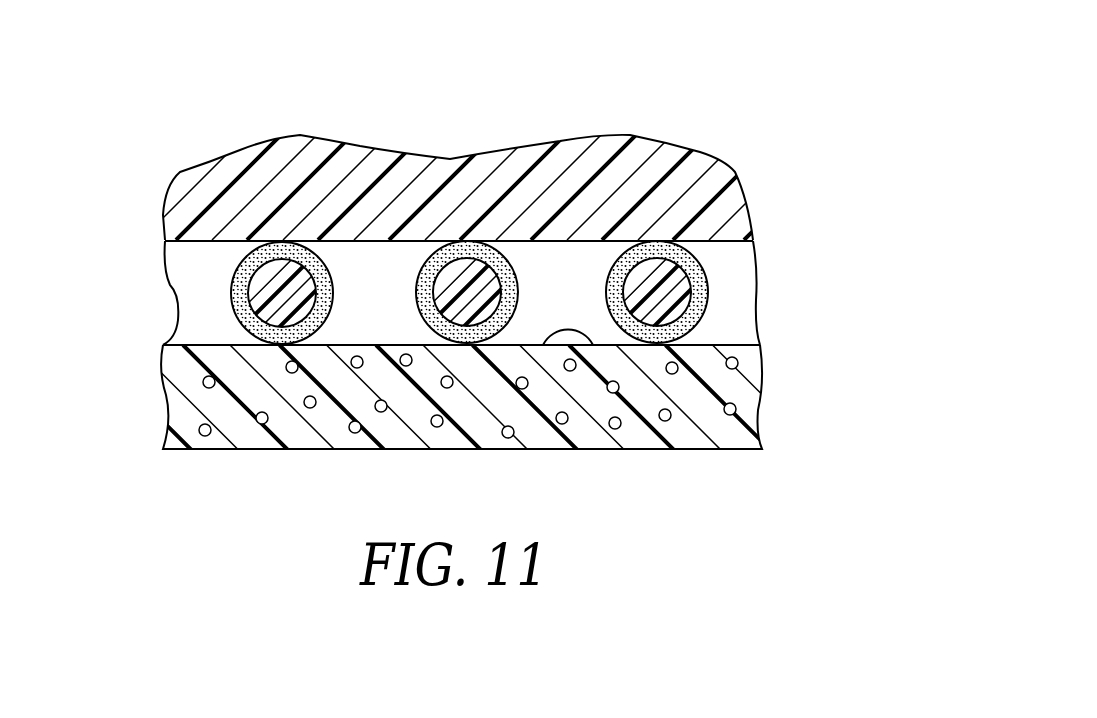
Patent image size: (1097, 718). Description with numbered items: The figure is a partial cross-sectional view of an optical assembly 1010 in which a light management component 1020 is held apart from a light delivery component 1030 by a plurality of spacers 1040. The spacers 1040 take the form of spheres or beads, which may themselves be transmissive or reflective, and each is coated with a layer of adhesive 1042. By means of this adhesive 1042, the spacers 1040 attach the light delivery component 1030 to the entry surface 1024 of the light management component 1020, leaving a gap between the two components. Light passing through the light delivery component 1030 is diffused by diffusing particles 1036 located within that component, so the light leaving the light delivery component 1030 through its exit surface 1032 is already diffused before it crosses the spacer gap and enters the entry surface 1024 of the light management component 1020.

The optical assembly 1010 is at (688, 62).
The light management component 1020 is at (717, 172).
The entry surface 1024 is at (553, 241).
The light delivery component 1030 is at (723, 386).
The exit surface 1032 is at (593, 345).
The diffusing particles 1036 is at (208, 437).
The spacers 1040 is at (278, 265).
The layer of adhesive 1042 is at (232, 291).